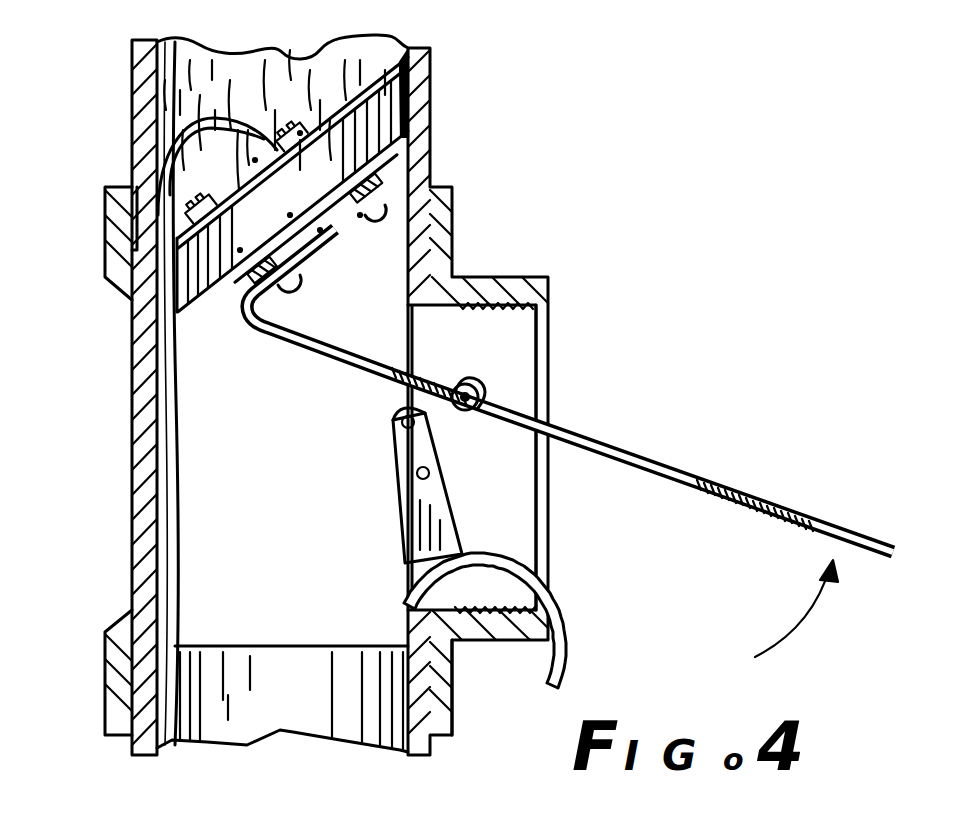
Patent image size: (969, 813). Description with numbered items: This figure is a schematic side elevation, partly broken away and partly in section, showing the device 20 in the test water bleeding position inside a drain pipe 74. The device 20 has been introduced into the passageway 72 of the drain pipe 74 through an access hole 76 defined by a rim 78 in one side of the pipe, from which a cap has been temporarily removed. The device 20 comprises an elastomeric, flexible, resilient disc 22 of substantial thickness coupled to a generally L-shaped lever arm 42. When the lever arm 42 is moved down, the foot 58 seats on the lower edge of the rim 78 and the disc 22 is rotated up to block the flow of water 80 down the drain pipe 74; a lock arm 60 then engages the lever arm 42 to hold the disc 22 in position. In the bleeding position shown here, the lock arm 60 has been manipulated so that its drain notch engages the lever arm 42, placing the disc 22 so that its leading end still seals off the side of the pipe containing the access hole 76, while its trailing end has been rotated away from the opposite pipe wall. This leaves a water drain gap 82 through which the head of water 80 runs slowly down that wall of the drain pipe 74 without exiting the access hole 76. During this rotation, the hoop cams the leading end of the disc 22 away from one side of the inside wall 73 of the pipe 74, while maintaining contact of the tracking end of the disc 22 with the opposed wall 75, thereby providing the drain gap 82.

The device 20 is at (568, 350).
The disc 22 is at (212, 333).
The lever arm 42 is at (733, 488).
The foot 58 is at (570, 622).
The lock arm 60 is at (490, 397).
The passageway 72 is at (170, 98).
The inside wall 73 is at (178, 220).
The drain pipe 74 is at (487, 88).
The opposed wall 75 is at (433, 72).
The access hole 76 is at (507, 360).
The rim 78 is at (455, 673).
The water 80 is at (398, 34).
The water drain gap 82 is at (167, 329).